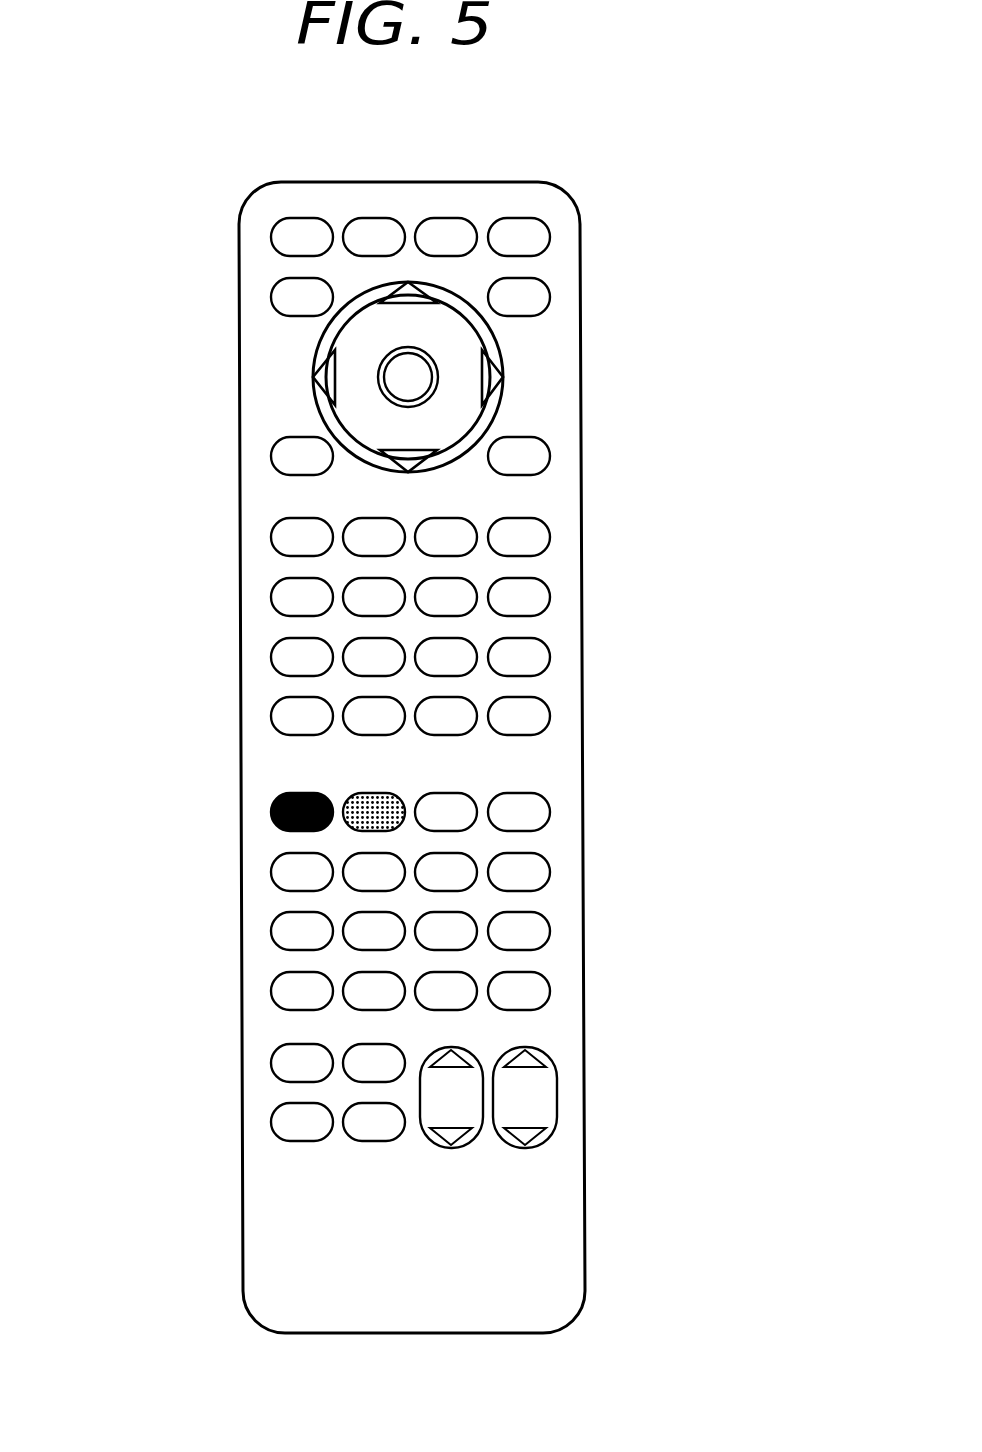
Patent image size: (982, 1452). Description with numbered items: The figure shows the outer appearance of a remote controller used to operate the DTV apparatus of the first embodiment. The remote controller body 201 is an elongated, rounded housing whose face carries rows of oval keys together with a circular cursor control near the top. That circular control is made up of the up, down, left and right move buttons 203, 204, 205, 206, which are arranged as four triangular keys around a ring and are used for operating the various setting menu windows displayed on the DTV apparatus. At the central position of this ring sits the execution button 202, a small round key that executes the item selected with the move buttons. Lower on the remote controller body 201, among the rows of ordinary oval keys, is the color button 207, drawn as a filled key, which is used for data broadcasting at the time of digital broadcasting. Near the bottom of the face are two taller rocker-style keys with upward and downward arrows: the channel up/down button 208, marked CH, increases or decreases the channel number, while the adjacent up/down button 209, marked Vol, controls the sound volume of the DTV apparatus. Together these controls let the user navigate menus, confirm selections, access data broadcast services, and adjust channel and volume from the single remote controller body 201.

The remote controller body 201 is at (556, 199).
The execution button 202 is at (403, 380).
The up move button 203 is at (408, 282).
The down move button 204 is at (415, 465).
The left move button 205 is at (313, 374).
The right move button 206 is at (497, 373).
The color button 207 is at (273, 812).
The channel up/down button 208 is at (545, 1142).
The up/down button 209 is at (468, 1145).